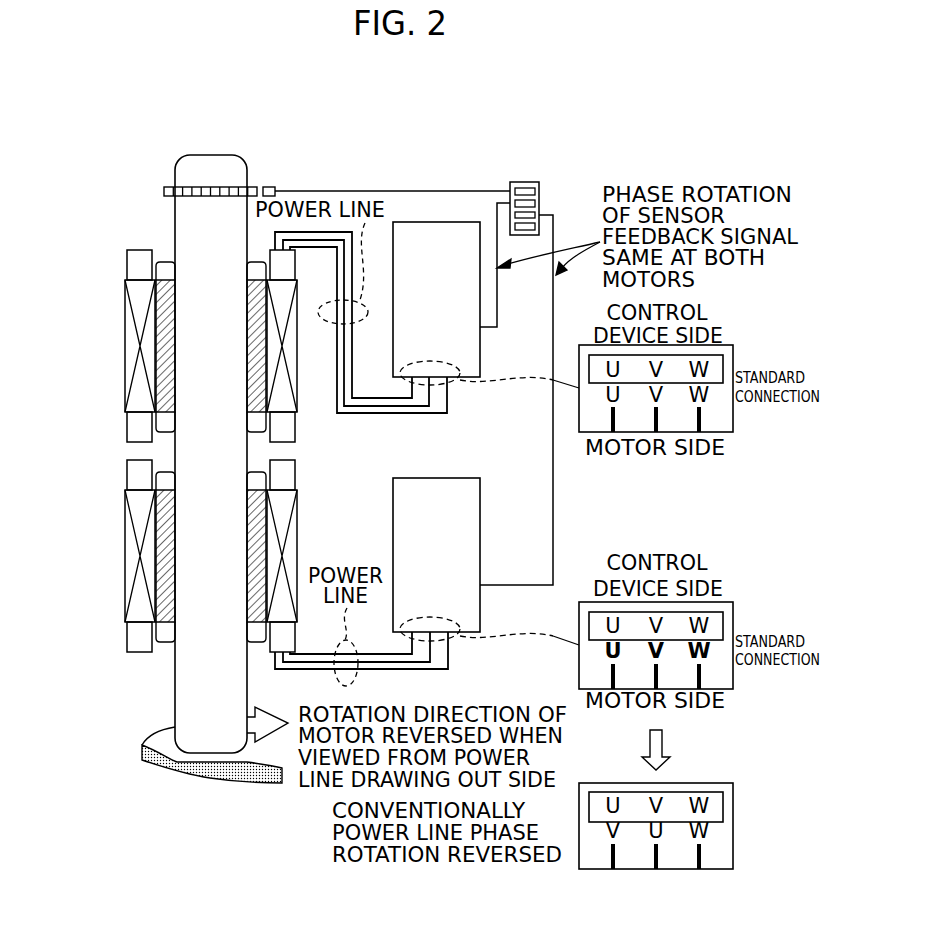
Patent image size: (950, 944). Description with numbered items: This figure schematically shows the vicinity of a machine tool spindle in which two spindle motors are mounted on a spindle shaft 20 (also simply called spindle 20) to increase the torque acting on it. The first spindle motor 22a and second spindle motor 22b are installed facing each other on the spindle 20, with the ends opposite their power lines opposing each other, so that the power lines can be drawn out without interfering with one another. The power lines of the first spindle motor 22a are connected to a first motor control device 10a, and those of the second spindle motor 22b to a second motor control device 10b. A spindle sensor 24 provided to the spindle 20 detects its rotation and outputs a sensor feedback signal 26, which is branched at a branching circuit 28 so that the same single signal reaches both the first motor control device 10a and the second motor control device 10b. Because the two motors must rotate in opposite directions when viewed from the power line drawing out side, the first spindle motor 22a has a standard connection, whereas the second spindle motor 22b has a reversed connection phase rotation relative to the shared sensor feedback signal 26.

The spindle shaft 20 is at (173, 697).
The first spindle motor 22a is at (125, 290).
The second spindle motor 22b is at (125, 600).
The spindle sensor 24 is at (172, 187).
The sensor feedback signal 26 is at (313, 190).
The branching circuit 28 is at (522, 182).
The first motor control device 10a is at (480, 358).
The second motor control device 10b is at (480, 613).